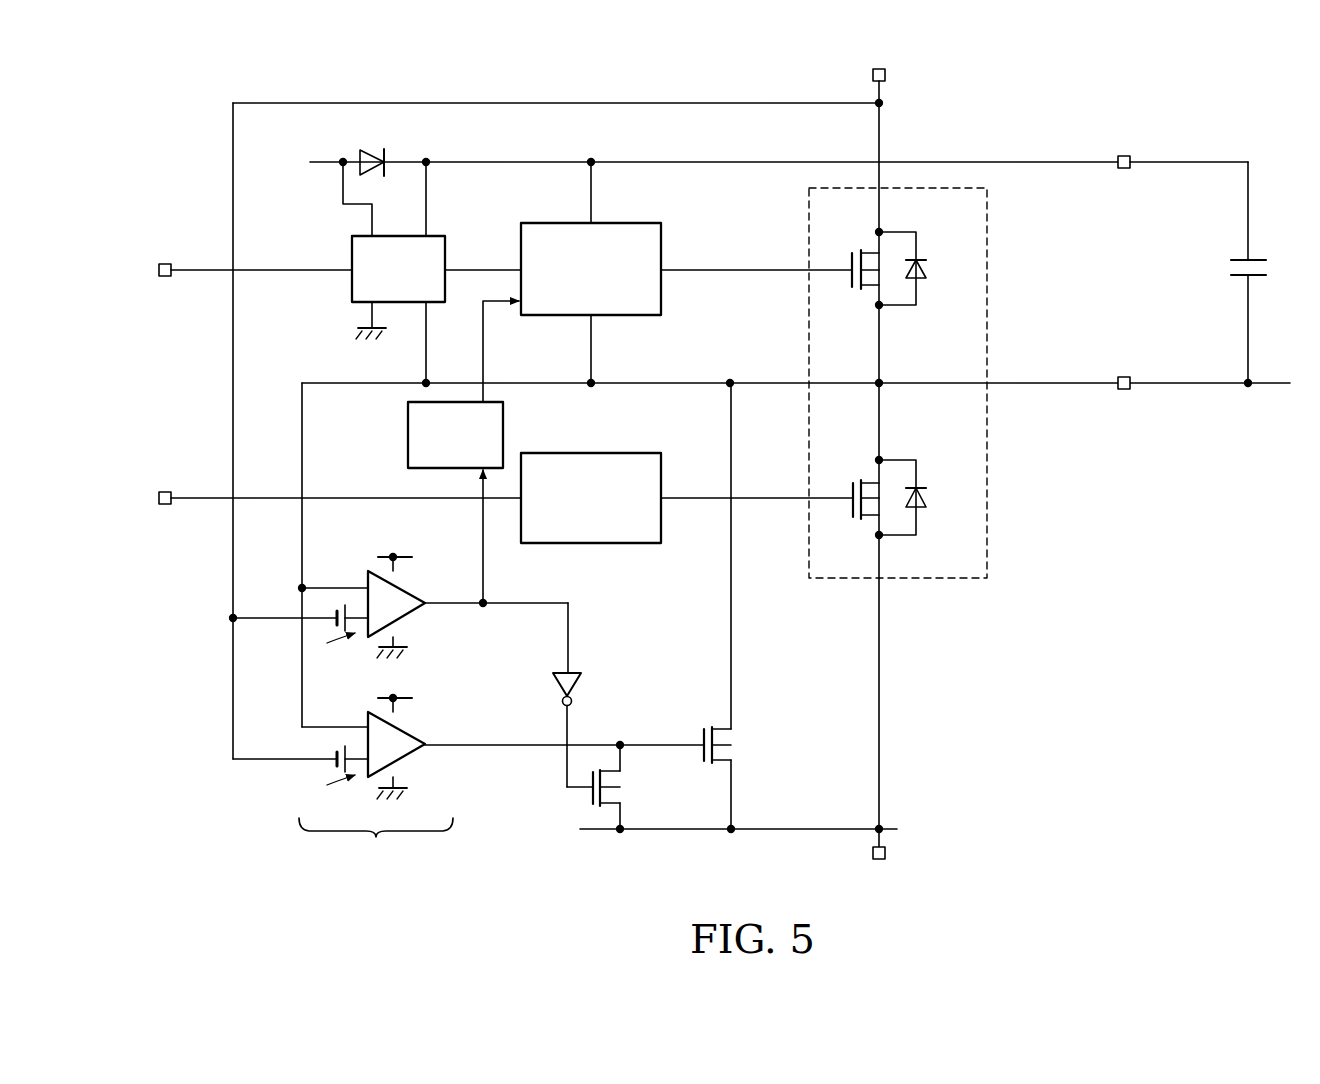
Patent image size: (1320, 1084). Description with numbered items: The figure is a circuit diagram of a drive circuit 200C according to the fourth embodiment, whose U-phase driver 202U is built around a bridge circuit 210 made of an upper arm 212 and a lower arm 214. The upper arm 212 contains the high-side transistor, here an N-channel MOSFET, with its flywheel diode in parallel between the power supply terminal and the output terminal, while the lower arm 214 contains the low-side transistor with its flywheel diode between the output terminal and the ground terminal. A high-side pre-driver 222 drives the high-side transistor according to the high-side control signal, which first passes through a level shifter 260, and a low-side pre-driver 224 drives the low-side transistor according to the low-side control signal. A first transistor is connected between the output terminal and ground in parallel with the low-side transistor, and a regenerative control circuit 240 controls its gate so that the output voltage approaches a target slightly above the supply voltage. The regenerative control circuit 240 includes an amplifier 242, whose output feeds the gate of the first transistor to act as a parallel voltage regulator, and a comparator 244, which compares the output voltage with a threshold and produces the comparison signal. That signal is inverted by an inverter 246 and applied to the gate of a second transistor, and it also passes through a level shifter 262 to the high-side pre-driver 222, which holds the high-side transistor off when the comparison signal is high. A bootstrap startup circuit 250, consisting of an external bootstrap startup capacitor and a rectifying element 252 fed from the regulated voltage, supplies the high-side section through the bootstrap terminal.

The drive circuit 200C is at (1280, 80).
The U-phase driver 202U is at (1010, 148).
The bridge circuit 210 is at (988, 286).
The upper arm 212 is at (905, 317).
The lower arm 214 is at (912, 453).
The high-side pre-driver 222 is at (632, 232).
The low-side pre-driver 224 is at (632, 460).
The regenerative control circuit 240 is at (346, 626).
The amplifier 242 is at (418, 733).
The comparator 244 is at (418, 592).
The inverter 246 is at (578, 688).
The bootstrap startup circuit 250 is at (1221, 272).
The rectifying element 252 is at (372, 152).
The level shifter 260 is at (346, 288).
The level shifter 262 is at (406, 437).